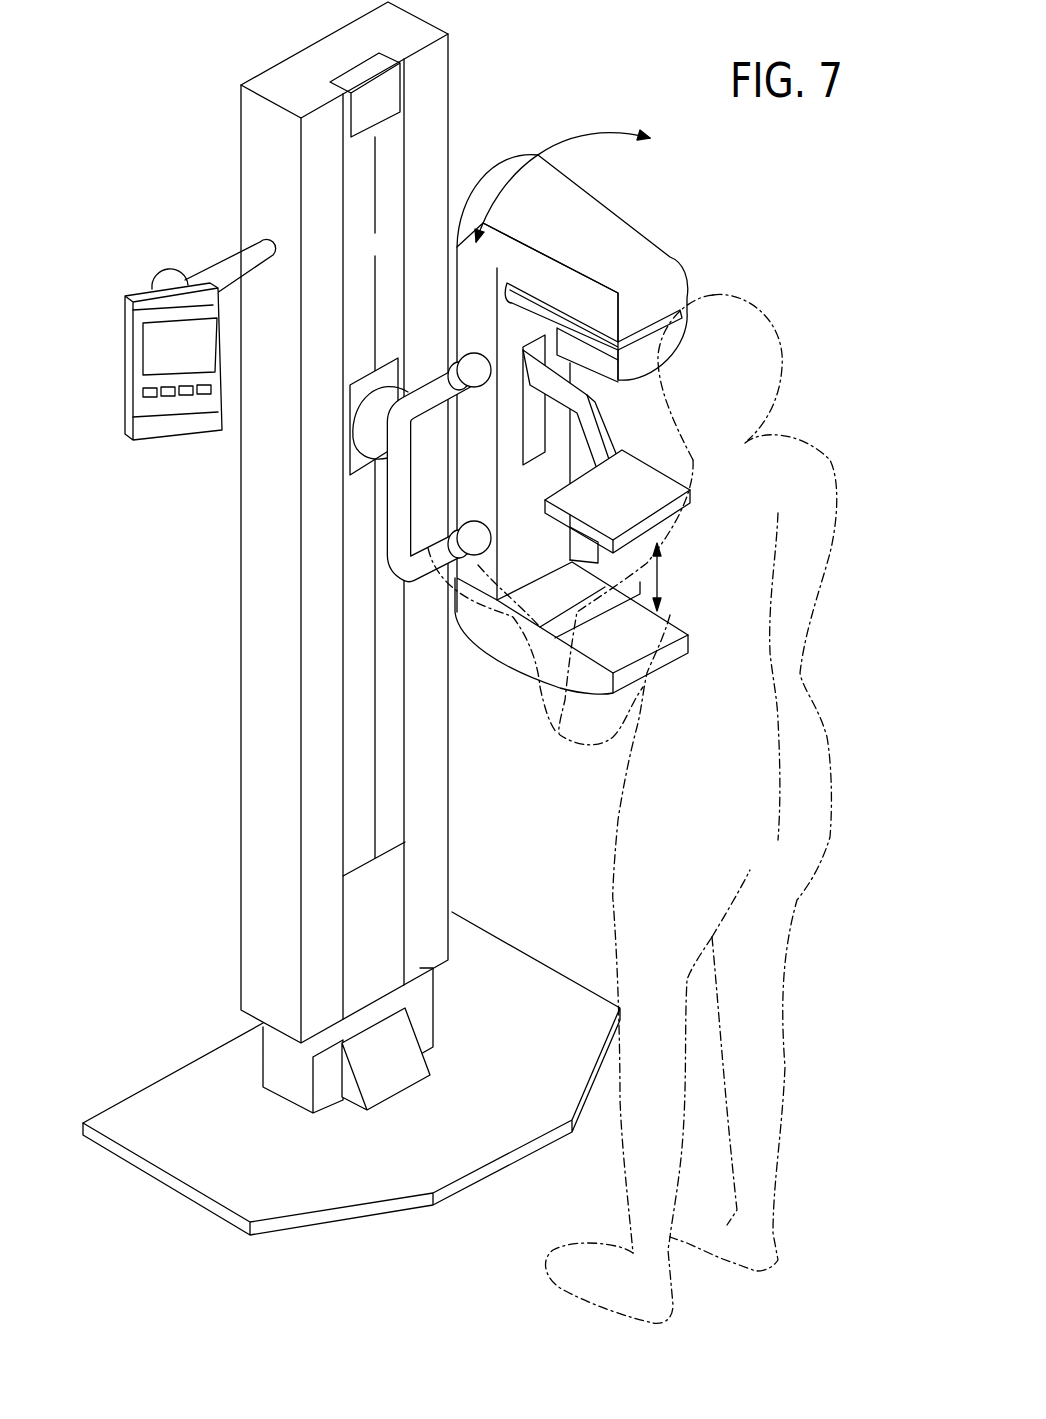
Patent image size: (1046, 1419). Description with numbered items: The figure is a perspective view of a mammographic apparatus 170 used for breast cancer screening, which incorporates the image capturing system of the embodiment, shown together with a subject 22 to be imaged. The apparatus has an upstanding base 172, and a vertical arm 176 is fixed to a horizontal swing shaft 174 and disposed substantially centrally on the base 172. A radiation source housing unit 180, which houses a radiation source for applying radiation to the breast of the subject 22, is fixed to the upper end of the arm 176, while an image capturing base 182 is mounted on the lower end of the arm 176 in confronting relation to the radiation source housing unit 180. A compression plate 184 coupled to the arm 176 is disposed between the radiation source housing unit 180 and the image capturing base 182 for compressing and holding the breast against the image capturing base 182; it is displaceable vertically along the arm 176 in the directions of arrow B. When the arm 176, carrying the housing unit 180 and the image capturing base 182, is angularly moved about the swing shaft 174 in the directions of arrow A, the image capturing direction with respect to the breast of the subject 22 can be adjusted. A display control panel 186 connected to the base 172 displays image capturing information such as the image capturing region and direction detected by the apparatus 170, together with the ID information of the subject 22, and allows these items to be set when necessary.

The mammographic apparatus 170 is at (831, 194).
The upstanding base 172 is at (252, 600).
The horizontal swing shaft 174 is at (430, 440).
The vertical arm 176 is at (473, 257).
The radiation source housing unit 180 is at (665, 287).
The image capturing base 182 is at (608, 647).
The compression plate 184 is at (655, 502).
The display control panel 186 is at (152, 348).
The subject 22 is at (818, 737).